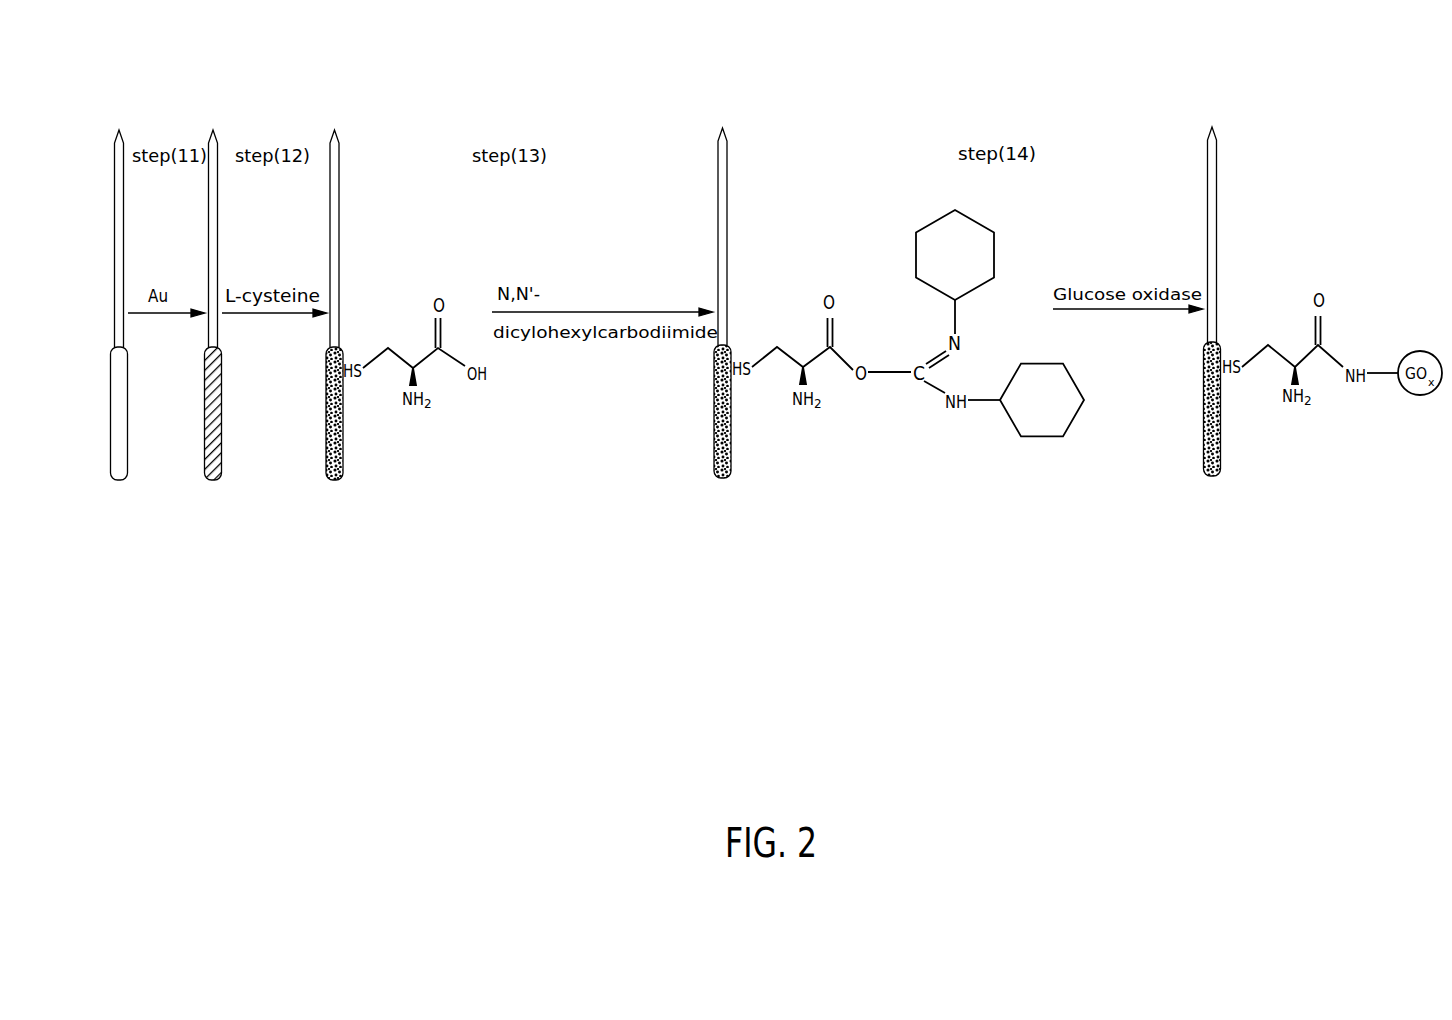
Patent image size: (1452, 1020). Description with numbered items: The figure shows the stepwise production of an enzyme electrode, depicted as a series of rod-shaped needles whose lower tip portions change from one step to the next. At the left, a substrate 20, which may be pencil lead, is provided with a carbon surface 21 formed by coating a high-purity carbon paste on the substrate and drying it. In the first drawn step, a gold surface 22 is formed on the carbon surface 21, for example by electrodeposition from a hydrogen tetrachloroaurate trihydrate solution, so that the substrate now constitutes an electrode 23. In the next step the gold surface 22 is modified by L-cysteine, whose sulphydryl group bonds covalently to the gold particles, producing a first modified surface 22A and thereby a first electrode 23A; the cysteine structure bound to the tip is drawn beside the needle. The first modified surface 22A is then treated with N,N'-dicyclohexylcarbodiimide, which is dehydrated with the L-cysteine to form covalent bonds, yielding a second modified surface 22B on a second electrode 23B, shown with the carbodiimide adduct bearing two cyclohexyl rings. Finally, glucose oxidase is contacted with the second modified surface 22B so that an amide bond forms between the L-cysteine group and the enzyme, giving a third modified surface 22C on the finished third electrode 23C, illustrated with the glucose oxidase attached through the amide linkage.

The substrate 20 is at (127, 206).
The carbon surface 21 is at (128, 413).
The gold surface 22 is at (222, 413).
The electrode 23 is at (213, 496).
The first modified surface 22A is at (343, 412).
The first electrode 23A is at (334, 496).
The second modified surface 22B is at (731, 410).
The second electrode 23B is at (722, 496).
The third modified surface 22C is at (1220, 410).
The third electrode 23C is at (1212, 492).